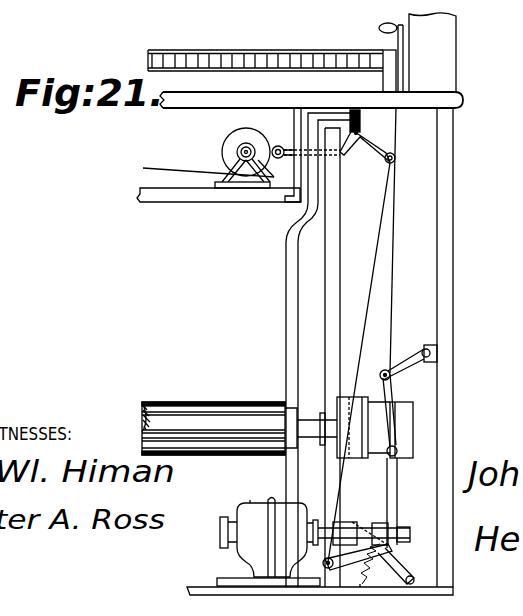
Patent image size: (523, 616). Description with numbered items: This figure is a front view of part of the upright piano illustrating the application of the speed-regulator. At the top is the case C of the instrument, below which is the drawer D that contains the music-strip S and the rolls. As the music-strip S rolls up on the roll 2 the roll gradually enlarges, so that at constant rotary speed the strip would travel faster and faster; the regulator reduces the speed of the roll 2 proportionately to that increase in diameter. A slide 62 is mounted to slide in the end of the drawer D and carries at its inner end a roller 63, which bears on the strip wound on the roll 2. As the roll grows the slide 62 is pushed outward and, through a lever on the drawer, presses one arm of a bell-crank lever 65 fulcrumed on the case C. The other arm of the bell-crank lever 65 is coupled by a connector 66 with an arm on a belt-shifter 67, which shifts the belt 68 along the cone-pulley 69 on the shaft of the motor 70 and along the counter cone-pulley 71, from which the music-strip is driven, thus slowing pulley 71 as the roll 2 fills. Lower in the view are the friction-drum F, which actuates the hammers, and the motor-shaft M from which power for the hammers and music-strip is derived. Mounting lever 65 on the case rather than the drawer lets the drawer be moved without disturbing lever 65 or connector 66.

The roll 2 is at (230, 140).
The slide 62 is at (273, 175).
The roller 63 is at (280, 146).
The bell-crank lever 65 is at (376, 146).
The connector 66 is at (365, 336).
The belt-shifter 67 is at (368, 520).
The belt 68 is at (352, 475).
The cone-pulley 69 is at (342, 525).
The motor 70 is at (250, 503).
The counter cone-pulley 71 is at (389, 419).
The case C is at (456, 183).
The drawer D is at (218, 209).
The music-strip S is at (199, 172).
The friction-drum F is at (221, 401).
The motor-shaft M is at (268, 542).